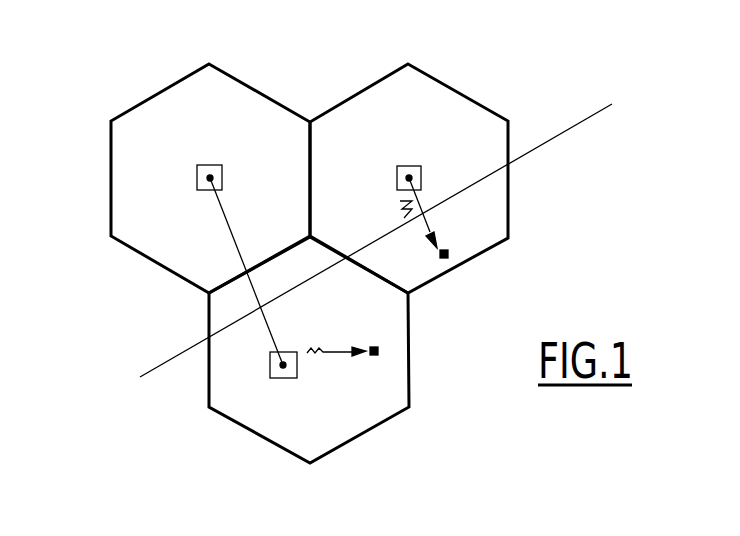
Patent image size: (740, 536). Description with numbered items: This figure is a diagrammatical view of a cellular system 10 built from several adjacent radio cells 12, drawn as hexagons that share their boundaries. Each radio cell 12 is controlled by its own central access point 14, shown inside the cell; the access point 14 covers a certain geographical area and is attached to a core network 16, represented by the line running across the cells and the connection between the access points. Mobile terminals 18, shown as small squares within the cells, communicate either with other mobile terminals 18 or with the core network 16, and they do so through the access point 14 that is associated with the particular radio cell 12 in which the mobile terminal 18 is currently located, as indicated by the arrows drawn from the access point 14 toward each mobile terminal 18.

The cellular system 10 is at (123, 87).
The radio cell 12 is at (250, 83).
The access point 14 is at (197, 182).
The core network 16 is at (157, 365).
The mobile terminal 18 is at (448, 257).